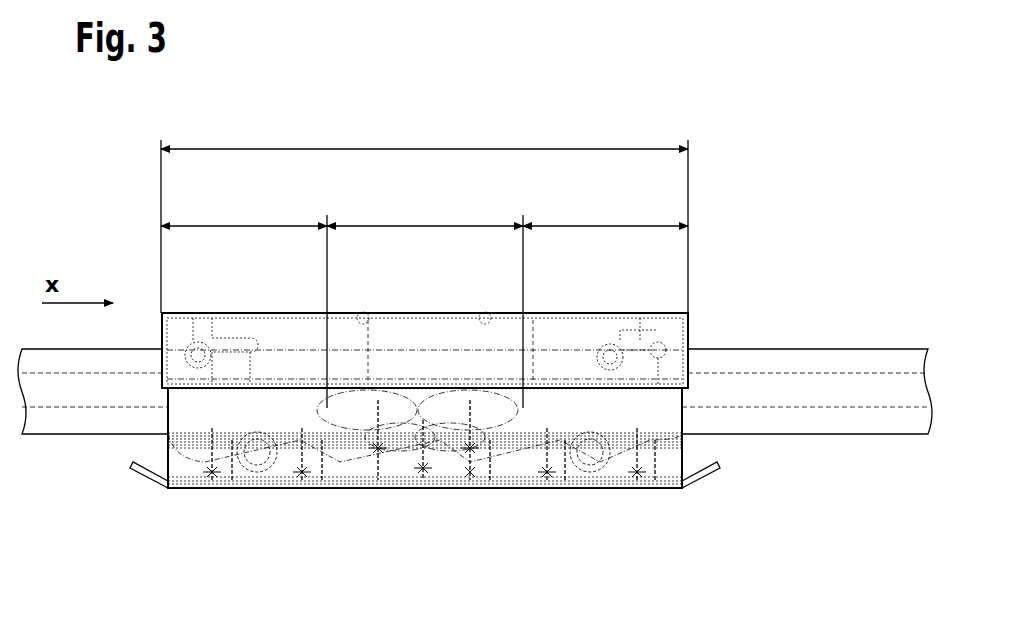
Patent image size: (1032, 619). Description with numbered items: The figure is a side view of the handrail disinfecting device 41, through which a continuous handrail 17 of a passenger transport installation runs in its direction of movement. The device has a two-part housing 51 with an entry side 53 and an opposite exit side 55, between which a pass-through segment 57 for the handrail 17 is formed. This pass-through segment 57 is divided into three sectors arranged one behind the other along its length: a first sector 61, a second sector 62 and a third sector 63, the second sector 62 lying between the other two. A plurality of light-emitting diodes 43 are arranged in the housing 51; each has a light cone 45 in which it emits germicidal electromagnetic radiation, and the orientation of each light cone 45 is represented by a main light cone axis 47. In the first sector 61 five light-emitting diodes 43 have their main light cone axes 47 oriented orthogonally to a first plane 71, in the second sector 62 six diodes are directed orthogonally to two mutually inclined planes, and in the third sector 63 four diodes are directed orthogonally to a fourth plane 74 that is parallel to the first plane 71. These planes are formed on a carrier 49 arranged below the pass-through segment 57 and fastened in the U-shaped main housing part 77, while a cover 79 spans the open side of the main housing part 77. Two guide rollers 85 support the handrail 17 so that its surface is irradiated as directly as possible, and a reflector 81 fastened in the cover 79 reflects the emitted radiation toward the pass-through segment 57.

The handrail 17 is at (806, 362).
The handrail disinfecting device 41 is at (604, 300).
The light-emitting diodes 43 is at (232, 488).
The light cone 45 is at (210, 488).
The main light cone axis 47 is at (170, 492).
The carrier 49 is at (500, 488).
The housing 51 is at (292, 307).
The entry side 53 is at (159, 338).
The exit side 55 is at (692, 333).
The pass-through segment 57 is at (388, 147).
The first sector 61 is at (244, 224).
The second sector 62 is at (426, 224).
The third sector 63 is at (606, 224).
The first plane 71 is at (250, 482).
The fourth plane 74 is at (584, 482).
The main housing part 77 is at (690, 418).
The cover 79 is at (548, 332).
The reflector 81 is at (384, 332).
The guide rollers 85 is at (256, 447).